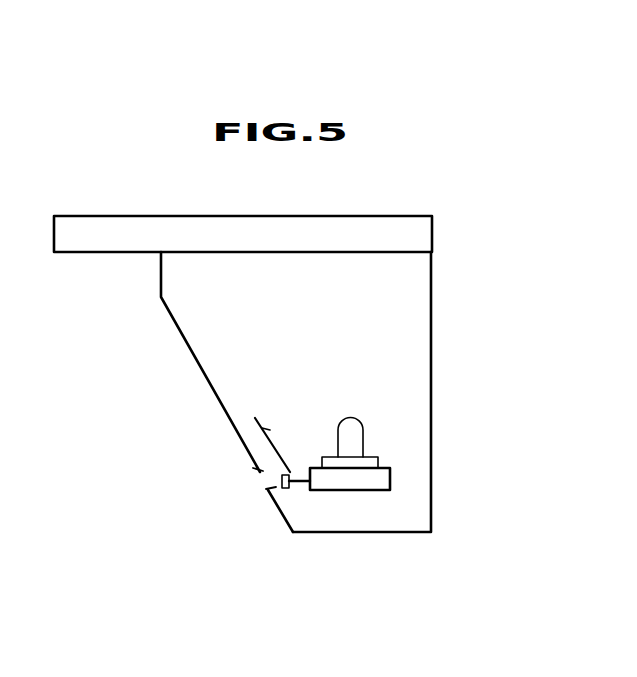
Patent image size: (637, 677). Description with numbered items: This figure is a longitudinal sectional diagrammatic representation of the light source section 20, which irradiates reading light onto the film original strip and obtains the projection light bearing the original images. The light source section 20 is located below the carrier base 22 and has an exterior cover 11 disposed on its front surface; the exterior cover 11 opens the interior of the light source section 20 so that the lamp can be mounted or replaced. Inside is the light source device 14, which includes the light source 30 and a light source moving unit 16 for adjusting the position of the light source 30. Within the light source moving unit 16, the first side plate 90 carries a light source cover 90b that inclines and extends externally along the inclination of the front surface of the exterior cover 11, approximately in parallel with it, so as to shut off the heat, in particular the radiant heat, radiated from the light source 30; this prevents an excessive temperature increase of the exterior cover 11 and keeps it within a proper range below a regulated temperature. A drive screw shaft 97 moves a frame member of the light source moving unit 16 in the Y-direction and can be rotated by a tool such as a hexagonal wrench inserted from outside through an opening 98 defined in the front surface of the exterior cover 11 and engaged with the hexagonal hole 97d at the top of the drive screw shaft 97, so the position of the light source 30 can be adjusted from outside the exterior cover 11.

The carrier base 22 is at (85, 242).
The light source section 20 is at (232, 352).
The exterior cover 11 is at (212, 400).
The light source device 14 is at (343, 383).
The light source moving unit 16 is at (410, 475).
The light source 30 is at (353, 430).
The first side plate 90 is at (290, 474).
The light source cover 90b is at (277, 420).
The drive screw shaft 97 is at (298, 484).
The hexagonal hole 97d is at (275, 492).
The opening 98 is at (263, 482).